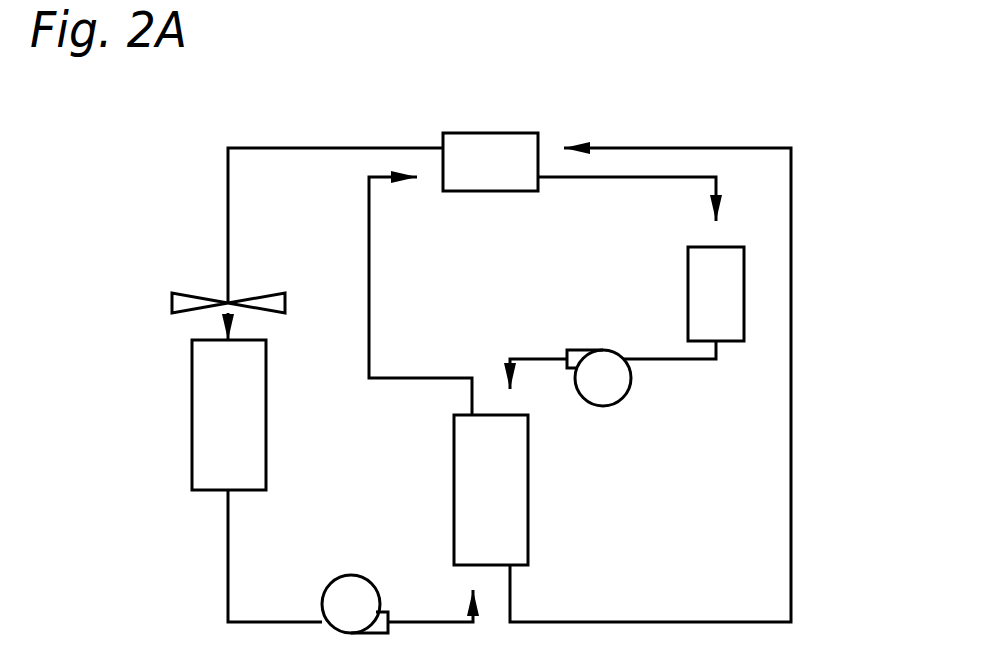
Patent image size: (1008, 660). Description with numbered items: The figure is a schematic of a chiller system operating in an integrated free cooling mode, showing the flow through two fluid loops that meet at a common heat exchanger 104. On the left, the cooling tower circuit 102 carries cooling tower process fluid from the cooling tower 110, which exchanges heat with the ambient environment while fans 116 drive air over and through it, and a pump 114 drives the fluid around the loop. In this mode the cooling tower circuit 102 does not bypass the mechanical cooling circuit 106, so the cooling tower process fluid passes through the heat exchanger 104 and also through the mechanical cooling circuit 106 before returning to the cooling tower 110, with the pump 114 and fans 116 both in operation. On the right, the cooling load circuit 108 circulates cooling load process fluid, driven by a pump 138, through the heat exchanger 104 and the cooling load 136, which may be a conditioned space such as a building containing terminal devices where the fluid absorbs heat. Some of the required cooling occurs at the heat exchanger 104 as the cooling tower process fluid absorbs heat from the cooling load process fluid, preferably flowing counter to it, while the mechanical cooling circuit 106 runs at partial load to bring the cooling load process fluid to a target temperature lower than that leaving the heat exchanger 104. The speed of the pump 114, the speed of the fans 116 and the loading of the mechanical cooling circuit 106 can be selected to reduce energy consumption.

The cooling tower circuit 102 is at (266, 128).
The heat exchanger 104 is at (454, 442).
The mechanical cooling circuit 106 is at (508, 133).
The cooling load circuit 108 is at (790, 120).
The cooling tower 110 is at (192, 372).
The pump 114 is at (342, 576).
The fans 116 is at (187, 293).
The cooling load 136 is at (688, 265).
The pump 138 is at (604, 406).